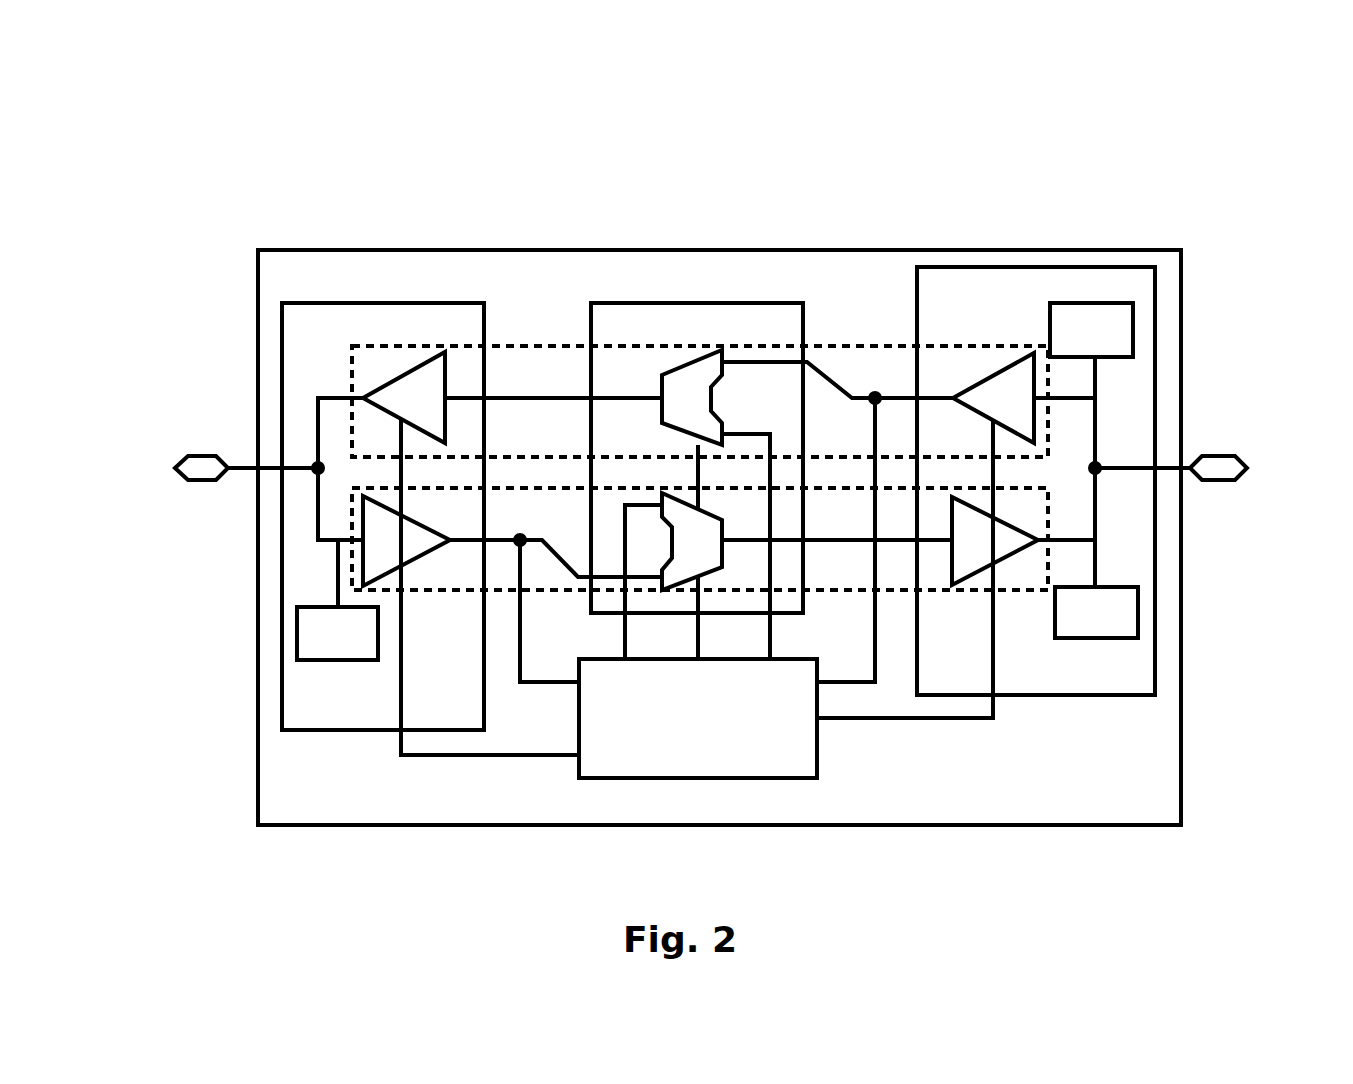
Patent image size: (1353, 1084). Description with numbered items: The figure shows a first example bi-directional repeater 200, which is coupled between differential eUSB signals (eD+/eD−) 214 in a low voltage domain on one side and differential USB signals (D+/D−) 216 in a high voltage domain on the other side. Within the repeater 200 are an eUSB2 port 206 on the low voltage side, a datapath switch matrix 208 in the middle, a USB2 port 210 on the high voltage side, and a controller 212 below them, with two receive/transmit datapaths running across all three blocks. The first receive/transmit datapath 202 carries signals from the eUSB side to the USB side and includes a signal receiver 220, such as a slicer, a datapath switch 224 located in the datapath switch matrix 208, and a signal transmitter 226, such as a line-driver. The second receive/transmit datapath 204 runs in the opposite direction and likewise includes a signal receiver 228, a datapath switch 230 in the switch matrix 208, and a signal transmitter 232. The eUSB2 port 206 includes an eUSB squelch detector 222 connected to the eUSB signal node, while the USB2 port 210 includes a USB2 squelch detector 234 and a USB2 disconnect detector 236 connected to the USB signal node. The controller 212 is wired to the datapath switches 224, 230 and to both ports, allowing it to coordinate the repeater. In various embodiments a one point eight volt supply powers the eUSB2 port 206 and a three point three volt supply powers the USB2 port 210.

The bi-directional repeater 200 is at (190, 126).
The first receive/transmit datapath 202 is at (350, 565).
The second receive/transmit datapath 204 is at (352, 374).
The eUSB2 port 206 is at (383, 516).
The datapath switch matrix 208 is at (697, 448).
The USB2 port 210 is at (1036, 481).
The controller 212 is at (698, 718).
The differential eUSB signals (eD+/eD−) 214 is at (203, 496).
The differential USB signals (D+/D−) 216 is at (1203, 500).
The signal receiver 220 is at (406, 541).
The eUSB squelch detector (SQD) 222 is at (337, 645).
The datapath switch 224 is at (692, 541).
The signal transmitter 226 is at (995, 541).
The signal receiver 228 is at (993, 398).
The datapath switch 230 is at (692, 397).
The signal transmitter 232 is at (404, 397).
The USB2 squelch detector (SQD) 234 is at (1091, 342).
The USB2 disconnect detector (DCD) 236 is at (1096, 626).